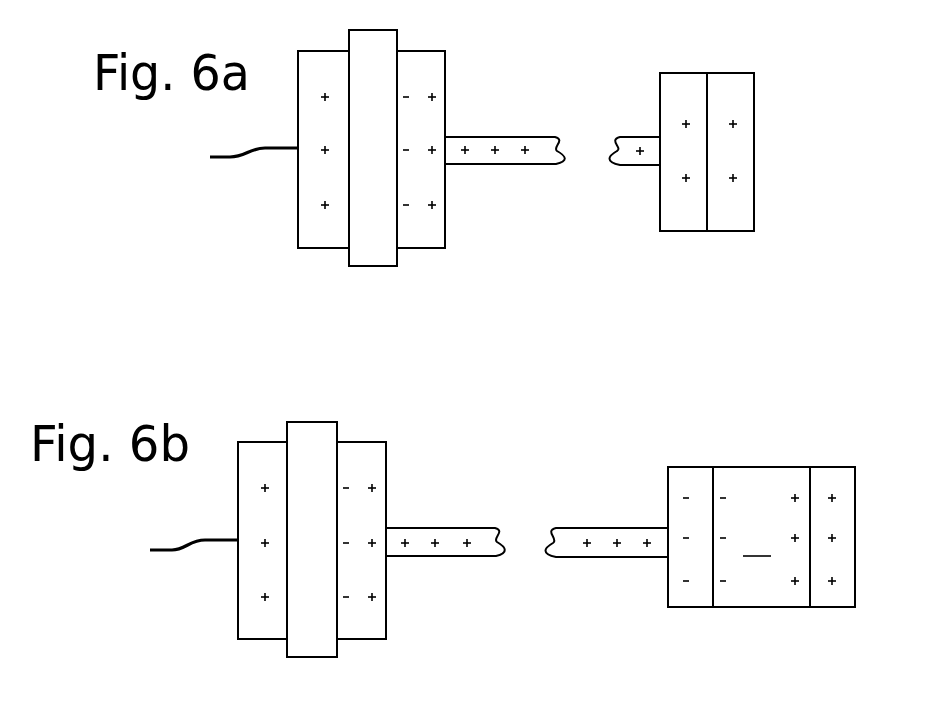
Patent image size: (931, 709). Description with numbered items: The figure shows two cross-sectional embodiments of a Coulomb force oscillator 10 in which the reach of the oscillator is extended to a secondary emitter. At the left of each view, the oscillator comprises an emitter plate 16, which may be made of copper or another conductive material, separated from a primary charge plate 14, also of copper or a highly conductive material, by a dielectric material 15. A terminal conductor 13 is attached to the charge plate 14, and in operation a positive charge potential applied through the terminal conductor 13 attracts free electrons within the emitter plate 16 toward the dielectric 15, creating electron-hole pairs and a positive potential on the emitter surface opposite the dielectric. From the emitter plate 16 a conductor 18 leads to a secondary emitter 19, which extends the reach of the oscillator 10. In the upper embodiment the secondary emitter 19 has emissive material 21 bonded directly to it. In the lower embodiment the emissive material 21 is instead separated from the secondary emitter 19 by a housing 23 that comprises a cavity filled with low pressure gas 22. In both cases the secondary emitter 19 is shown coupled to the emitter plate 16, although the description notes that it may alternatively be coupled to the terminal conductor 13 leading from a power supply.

In FIG. 6a, the Coulomb force oscillator 10 is at (572, 44).
In FIG. 6b, the Coulomb force oscillator 10 is at (510, 443).
In FIG. 6a, the terminal conductor 13 is at (224, 155).
In FIG. 6b, the terminal conductor 13 is at (167, 548).
In FIG. 6a, the primary charge plate 14 is at (298, 207).
In FIG. 6b, the primary charge plate 14 is at (238, 598).
In FIG. 6a, the dielectric material 15 is at (349, 262).
In FIG. 6b, the dielectric material 15 is at (287, 653).
In FIG. 6a, the emitter plate 16 is at (447, 80).
In FIG. 6b, the emitter plate 16 is at (387, 472).
In FIG. 6a, the conductor 18 is at (513, 135).
In FIG. 6b, the conductor 18 is at (453, 527).
In FIG. 6a, the secondary emitter 19 is at (660, 203).
In FIG. 6b, the secondary emitter 19 is at (678, 466).
In FIG. 6a, the emissive material 21 is at (757, 143).
In FIG. 6b, the emissive material 21 is at (830, 466).
In FIG. 6b, the low pressure gas 22 is at (757, 543).
In FIG. 6b, the housing 23 is at (758, 466).